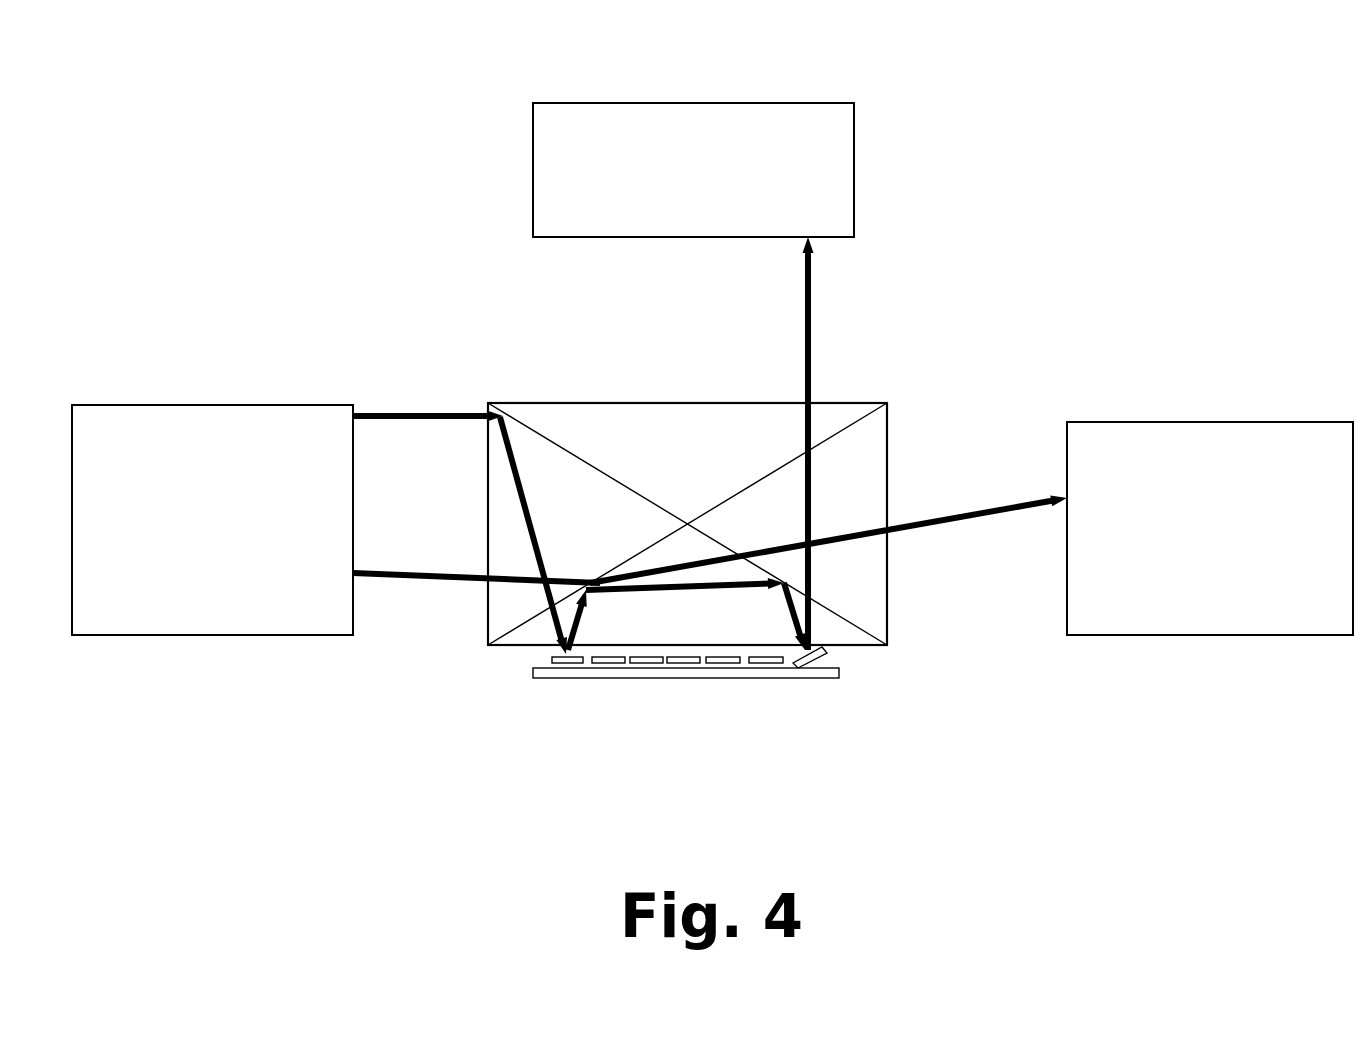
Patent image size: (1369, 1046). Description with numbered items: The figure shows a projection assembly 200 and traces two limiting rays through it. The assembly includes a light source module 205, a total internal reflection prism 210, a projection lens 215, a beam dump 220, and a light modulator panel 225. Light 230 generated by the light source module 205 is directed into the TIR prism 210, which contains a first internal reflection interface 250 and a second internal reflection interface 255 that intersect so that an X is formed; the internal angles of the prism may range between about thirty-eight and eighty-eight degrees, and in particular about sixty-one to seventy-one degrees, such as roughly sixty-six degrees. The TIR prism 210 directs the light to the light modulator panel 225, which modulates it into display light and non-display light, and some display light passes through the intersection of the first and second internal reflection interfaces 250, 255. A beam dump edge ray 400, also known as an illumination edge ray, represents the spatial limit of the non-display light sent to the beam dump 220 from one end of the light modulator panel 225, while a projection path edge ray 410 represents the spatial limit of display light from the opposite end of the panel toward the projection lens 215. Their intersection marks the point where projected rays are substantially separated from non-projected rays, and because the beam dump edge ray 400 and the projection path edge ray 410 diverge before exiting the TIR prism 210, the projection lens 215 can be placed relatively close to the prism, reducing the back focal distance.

The projection assembly 200 is at (330, 140).
The light source module 205 is at (138, 420).
The total internal reflection (TIR) prism 210 is at (480, 634).
The projection lens 215 is at (854, 195).
The beam dump 220 is at (1302, 420).
The light modulator panel 225 is at (685, 680).
The light 230 is at (418, 413).
The first internal reflection interface 250 is at (555, 440).
The second internal reflection interface 255 is at (851, 414).
The beam dump edge ray 400 is at (960, 522).
The projection path edge ray 410 is at (805, 330).